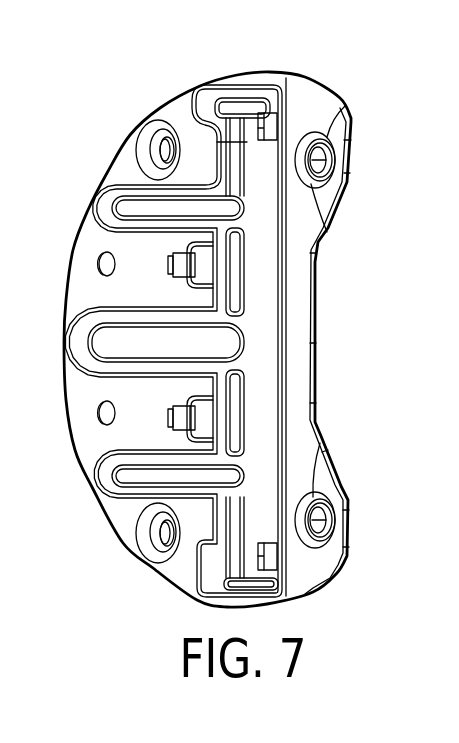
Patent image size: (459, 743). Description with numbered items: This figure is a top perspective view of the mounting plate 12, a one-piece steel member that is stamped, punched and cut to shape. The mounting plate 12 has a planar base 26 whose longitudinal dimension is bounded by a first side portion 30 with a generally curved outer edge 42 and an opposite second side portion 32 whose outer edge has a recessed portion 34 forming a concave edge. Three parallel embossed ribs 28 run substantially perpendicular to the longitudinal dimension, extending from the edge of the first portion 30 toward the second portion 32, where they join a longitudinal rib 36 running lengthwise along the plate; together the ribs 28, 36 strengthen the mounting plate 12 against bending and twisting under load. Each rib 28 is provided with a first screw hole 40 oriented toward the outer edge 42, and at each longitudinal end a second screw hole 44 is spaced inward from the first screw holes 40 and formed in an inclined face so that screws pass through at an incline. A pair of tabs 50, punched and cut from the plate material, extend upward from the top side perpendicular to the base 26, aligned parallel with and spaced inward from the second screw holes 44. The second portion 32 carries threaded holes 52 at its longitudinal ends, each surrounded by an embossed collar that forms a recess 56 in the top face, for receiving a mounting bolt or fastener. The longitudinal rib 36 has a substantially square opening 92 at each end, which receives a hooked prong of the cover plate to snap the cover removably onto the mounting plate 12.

The mounting plate 12 is at (208, 64).
The planar base 26 is at (77, 290).
The embossed ribs 28 is at (133, 207).
The first side portion 30 is at (177, 106).
The second side portion 32 is at (305, 104).
The recessed portion 34 is at (318, 357).
The longitudinal rib 36 is at (270, 274).
The first screw hole 40 is at (97, 263).
The outer edge 42 is at (85, 470).
The second screw hole 44 is at (156, 142).
The tabs 50 is at (170, 267).
The threaded holes 52 is at (157, 158).
The recess 56 is at (331, 229).
The opening 92 is at (266, 114).